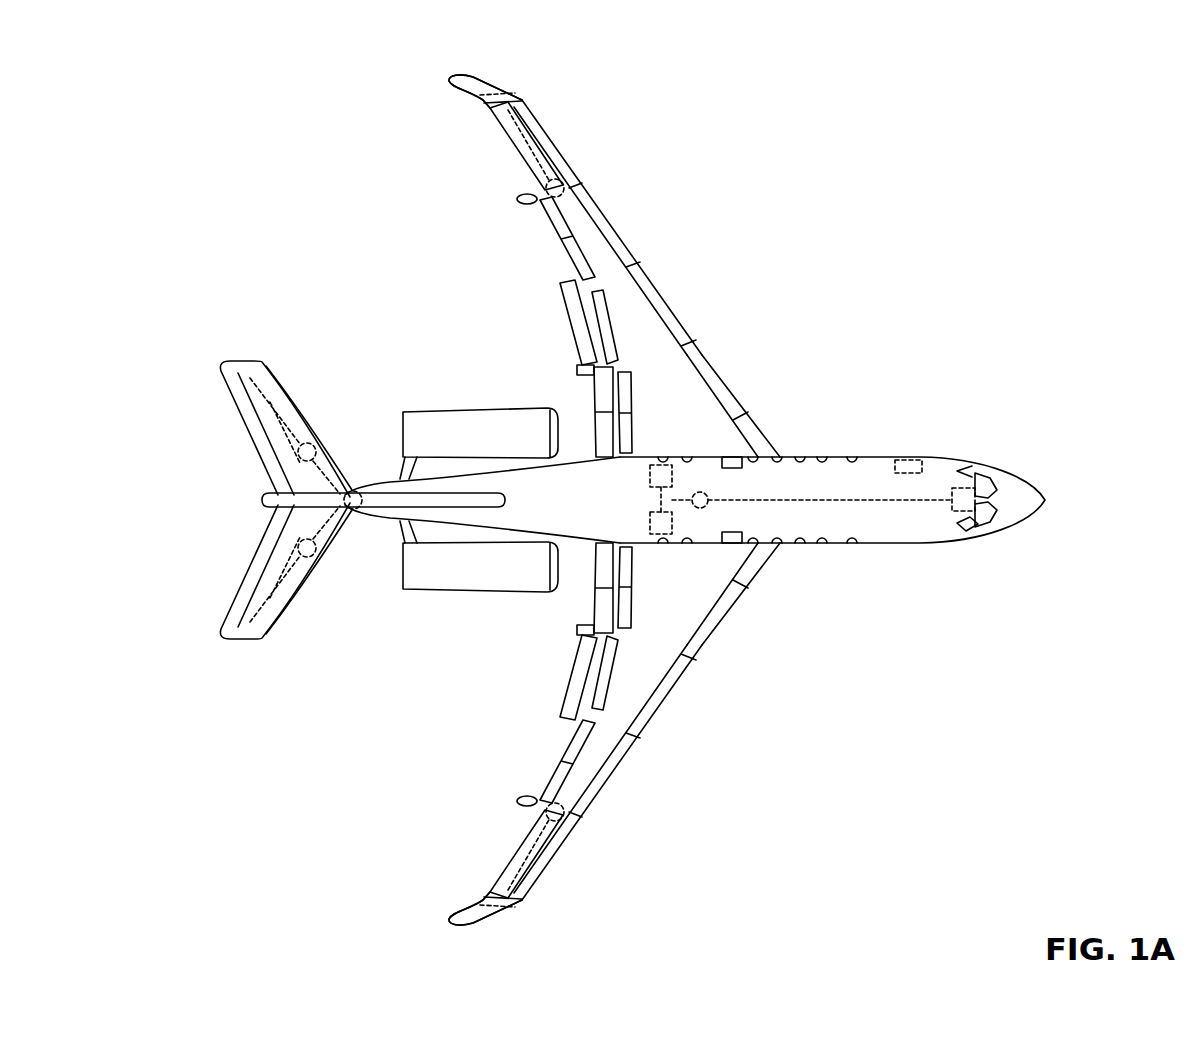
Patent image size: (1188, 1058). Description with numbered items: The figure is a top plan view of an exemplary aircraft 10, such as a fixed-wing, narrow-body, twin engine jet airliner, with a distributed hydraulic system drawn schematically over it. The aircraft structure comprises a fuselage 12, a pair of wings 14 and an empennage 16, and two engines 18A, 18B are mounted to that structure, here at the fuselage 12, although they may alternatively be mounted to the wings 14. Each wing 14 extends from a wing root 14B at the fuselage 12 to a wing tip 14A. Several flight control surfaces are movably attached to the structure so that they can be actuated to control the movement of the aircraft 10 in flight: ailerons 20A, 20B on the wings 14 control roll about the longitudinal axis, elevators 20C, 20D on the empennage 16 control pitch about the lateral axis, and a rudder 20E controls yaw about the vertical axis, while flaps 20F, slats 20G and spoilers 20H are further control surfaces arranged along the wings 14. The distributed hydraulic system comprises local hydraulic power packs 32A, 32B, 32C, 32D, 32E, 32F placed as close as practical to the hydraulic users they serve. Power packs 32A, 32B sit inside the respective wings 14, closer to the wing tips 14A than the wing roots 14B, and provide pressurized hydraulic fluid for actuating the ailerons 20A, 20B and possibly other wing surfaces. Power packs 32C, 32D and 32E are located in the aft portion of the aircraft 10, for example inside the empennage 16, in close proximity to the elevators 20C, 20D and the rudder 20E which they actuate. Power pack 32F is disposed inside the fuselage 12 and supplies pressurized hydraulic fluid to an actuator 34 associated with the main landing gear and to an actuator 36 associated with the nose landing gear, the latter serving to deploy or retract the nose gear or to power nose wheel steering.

The aircraft 10 is at (904, 172).
The fuselage 12 is at (919, 526).
The wings 14 is at (680, 253).
The wing tip 14A is at (520, 72).
The wing root 14B is at (797, 440).
The empennage 16 is at (318, 457).
The engine 18A is at (497, 412).
The engine 18B is at (477, 589).
The aileron 20A is at (513, 153).
The aileron 20B is at (513, 846).
The elevator 20C is at (245, 392).
The elevator 20D is at (247, 592).
The rudder 20E is at (245, 495).
The flap 20F is at (590, 377).
The slat 20G is at (684, 323).
The spoiler 20H is at (575, 335).
The local hydraulic power pack 32A is at (558, 181).
The local hydraulic power pack 32B is at (558, 819).
The local hydraulic power pack 32C is at (308, 443).
The local hydraulic power pack 32D is at (345, 497).
The local hydraulic power pack 32E is at (308, 557).
The local hydraulic power pack 32F is at (700, 492).
The actuator 34 is at (665, 487).
The actuator 36 is at (965, 488).